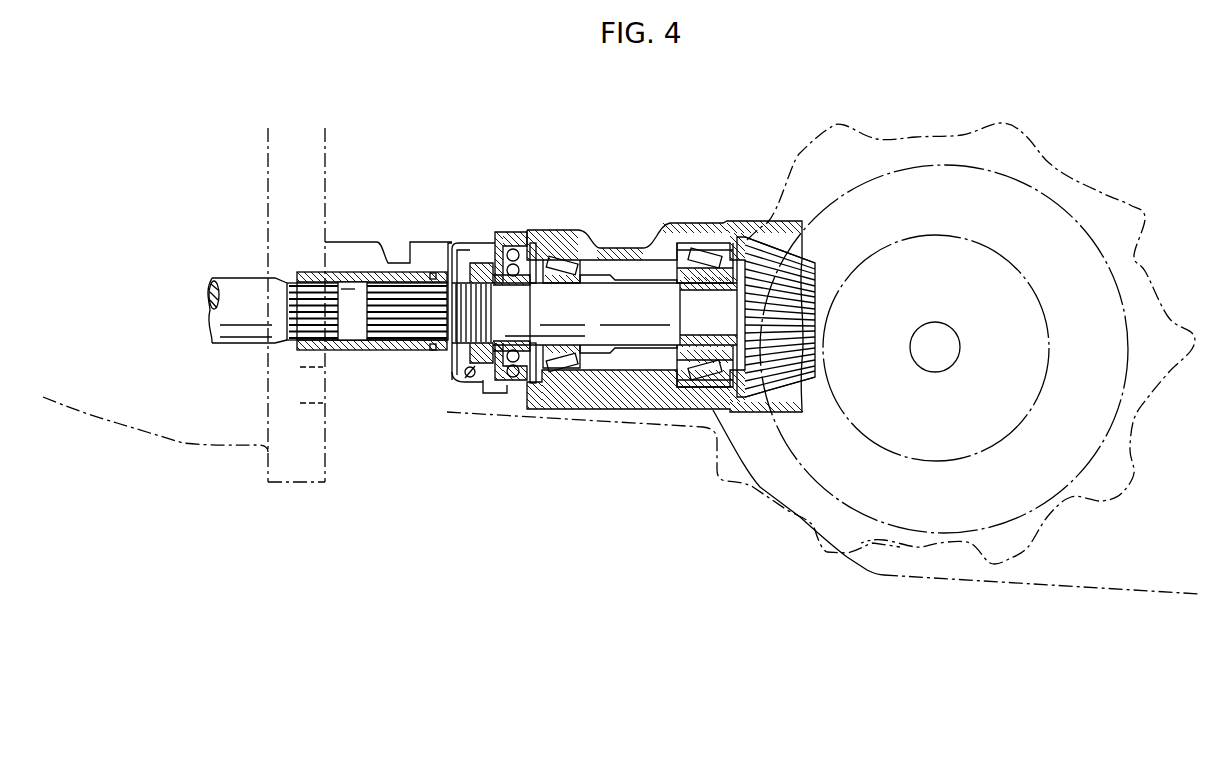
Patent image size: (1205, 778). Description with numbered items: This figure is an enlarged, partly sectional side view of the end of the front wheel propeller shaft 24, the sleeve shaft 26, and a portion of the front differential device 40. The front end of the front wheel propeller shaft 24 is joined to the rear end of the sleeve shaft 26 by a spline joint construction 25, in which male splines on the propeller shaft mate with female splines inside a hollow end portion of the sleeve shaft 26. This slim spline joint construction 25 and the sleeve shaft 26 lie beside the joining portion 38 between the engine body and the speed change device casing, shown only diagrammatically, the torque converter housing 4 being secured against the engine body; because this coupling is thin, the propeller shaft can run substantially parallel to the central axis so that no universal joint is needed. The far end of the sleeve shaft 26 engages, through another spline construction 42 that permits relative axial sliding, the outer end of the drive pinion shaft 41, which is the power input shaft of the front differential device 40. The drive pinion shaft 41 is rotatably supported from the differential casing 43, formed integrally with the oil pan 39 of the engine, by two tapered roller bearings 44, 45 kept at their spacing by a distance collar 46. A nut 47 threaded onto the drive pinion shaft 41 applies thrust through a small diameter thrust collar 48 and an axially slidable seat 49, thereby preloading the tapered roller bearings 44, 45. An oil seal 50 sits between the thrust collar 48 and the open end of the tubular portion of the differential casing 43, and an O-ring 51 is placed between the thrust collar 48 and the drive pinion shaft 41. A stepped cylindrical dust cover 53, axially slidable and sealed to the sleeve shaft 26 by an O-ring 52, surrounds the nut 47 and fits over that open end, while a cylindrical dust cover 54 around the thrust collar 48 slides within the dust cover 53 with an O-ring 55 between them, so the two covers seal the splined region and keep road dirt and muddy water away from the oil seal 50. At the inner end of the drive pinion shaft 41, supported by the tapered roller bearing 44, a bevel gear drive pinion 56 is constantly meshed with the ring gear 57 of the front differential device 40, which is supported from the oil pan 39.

The torque converter housing 4 is at (150, 433).
The front wheel propeller shaft 24 is at (225, 320).
The spline joint construction 25 is at (333, 350).
The sleeve shaft 26 is at (357, 273).
The joining portion 38 is at (313, 205).
The oil pan 39 is at (565, 420).
The front differential device 40 is at (898, 157).
The drive pinion shaft 41 is at (622, 300).
The spline construction 42 is at (400, 327).
The differential casing 43 is at (632, 390).
The tapered roller bearing 44 is at (693, 345).
The tapered roller bearing 45 is at (566, 250).
The distance collar 46 is at (640, 280).
The nut 47 is at (457, 382).
The thrust collar 48 is at (515, 235).
The seat 49 is at (538, 247).
The oil seal 50 is at (522, 390).
The O-ring 51 is at (500, 298).
The O-ring 52 is at (435, 350).
The stepped cylindrical dust cover 53 is at (455, 246).
The cylindrical dust cover 54 is at (485, 393).
The O-ring 55 is at (470, 384).
The bevel gear drive pinion 56 is at (798, 285).
The ring gear 57 is at (1038, 191).